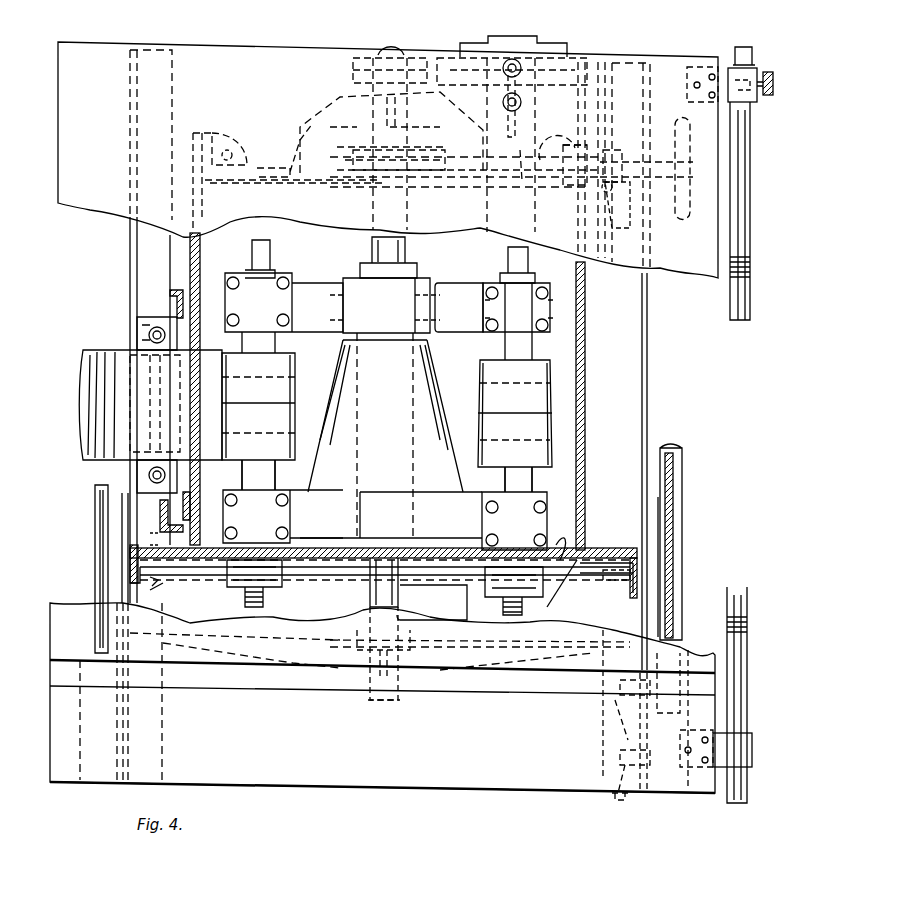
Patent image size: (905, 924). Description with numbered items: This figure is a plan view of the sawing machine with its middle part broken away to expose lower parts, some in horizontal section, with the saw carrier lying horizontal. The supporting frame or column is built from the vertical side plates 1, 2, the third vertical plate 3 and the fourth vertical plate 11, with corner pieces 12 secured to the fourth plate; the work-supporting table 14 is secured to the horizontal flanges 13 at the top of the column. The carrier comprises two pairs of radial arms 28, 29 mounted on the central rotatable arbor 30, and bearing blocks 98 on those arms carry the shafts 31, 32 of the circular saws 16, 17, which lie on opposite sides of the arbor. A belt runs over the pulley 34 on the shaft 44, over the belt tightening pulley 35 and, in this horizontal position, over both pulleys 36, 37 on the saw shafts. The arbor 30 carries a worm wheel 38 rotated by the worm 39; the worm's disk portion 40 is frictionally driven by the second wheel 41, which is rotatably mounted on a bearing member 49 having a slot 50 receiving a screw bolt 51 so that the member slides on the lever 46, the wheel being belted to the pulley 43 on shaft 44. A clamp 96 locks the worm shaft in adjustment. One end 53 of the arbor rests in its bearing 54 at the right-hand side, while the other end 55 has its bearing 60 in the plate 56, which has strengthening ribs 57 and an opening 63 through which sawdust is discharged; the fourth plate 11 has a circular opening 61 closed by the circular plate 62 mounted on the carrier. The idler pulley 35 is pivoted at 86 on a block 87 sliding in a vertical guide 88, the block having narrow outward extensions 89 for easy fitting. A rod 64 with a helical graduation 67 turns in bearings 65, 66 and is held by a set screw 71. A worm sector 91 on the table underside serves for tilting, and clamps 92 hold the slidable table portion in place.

The side plate 1 is at (200, 262).
The side plate 2 is at (586, 330).
The third vertical plate 3 is at (278, 183).
The fourth vertical plate 11 is at (562, 586).
The corner piece 12 is at (622, 598).
The horizontal flange 13 is at (163, 130).
The work-supporting table 14 is at (384, 417).
The circular saw 16 is at (200, 578).
The circular saw 17 is at (605, 582).
The radial arm 28 is at (298, 278).
The radial arm 29 is at (456, 280).
The arbor 30 is at (406, 258).
The saw shaft 31 is at (276, 478).
The saw shaft 32 is at (534, 486).
The pulley 34 is at (445, 360).
The belt tightening pulley 35 is at (85, 450).
The pulley 36 is at (296, 365).
The pulley 37 is at (480, 372).
The worm wheel 38 is at (443, 185).
The worm 39 is at (401, 145).
The disk portion 40 is at (584, 123).
The second wheel 41 is at (583, 88).
The pulley 43 is at (350, 78).
The shaft 44 is at (402, 54).
The lever 46 is at (494, 100).
The bearing member 49 is at (547, 55).
The slot 50 is at (508, 128).
The screw bolt 51 is at (522, 70).
The arbor end 53 is at (378, 108).
The bearing 54 is at (408, 120).
The arbor end 55 is at (368, 690).
The plate 56 is at (522, 677).
The strengthening rib 57 is at (272, 668).
The bearing 60 is at (410, 664).
The circular opening 61 is at (205, 555).
The circular plate 62 is at (300, 558).
The opening 63 is at (432, 602).
The rod 64 is at (748, 198).
The bearing 65 is at (752, 770).
The bearing 66 is at (750, 104).
The graduation 67 is at (750, 272).
The set screw 71 is at (768, 72).
The pivot 86 is at (146, 507).
The block 87 is at (156, 534).
The vertical guide 88 is at (170, 292).
The outward extension 89 is at (170, 308).
The worm sector 91 is at (684, 545).
The clamp 92 is at (618, 826).
The clamp 96 is at (620, 230).
The bearing block 98 is at (546, 310).